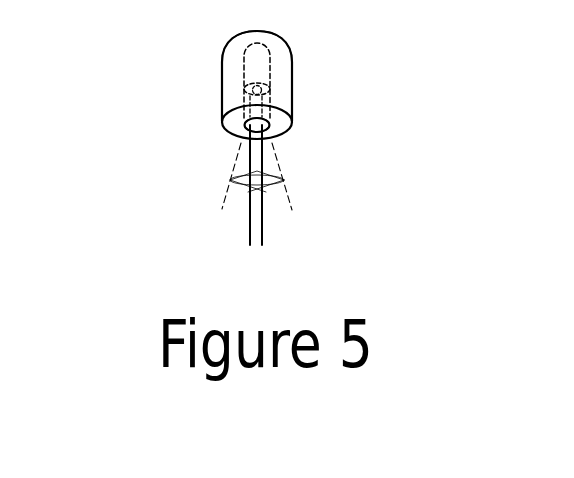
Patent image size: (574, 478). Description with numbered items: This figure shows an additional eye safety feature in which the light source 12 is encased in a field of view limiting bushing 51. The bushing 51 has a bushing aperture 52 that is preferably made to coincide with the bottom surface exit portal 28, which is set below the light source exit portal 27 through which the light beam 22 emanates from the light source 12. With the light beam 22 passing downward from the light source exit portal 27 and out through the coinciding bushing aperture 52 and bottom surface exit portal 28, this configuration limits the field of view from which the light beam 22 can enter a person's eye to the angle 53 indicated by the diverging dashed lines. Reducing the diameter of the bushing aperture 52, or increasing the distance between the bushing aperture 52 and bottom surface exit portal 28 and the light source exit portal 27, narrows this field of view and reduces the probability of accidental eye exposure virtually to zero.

The light source 12 is at (258, 60).
The field of view limiting bushing 51 is at (233, 90).
The light source exit portal 27 is at (262, 91).
The bottom surface exit portal 28 is at (243, 142).
The bushing aperture 52 is at (221, 161).
The angle 53 is at (272, 188).
The light beam 22 is at (251, 221).